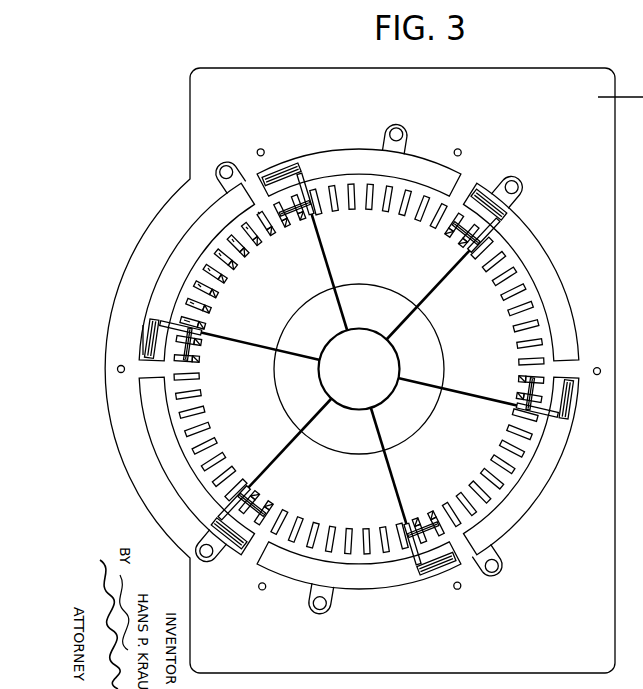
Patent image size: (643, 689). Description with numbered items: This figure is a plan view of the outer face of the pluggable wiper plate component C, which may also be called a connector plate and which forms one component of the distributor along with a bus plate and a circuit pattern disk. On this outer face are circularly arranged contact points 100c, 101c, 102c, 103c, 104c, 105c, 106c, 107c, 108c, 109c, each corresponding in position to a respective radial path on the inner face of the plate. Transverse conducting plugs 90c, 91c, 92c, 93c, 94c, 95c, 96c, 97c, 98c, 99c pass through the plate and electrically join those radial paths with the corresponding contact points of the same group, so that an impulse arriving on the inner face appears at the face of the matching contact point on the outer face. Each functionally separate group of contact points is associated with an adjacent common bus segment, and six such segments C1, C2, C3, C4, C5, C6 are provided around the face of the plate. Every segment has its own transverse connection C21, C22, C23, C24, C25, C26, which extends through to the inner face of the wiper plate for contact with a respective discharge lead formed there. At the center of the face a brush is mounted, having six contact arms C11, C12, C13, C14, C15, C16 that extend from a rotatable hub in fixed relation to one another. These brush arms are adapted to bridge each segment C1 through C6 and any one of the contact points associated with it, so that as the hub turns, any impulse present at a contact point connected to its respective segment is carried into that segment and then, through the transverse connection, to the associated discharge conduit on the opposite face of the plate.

The pluggable wiper plate component C is at (576, 64).
The common bus segment C1 is at (210, 222).
The common bus segment C2 is at (420, 165).
The common bus segment C3 is at (525, 236).
The common bus segment C4 is at (540, 479).
The common bus segment C5 is at (387, 577).
The common bus segment C6 is at (140, 480).
The brush contact arm C11 is at (254, 343).
The brush contact arm C12 is at (330, 262).
The brush contact arm C13 is at (442, 284).
The brush contact arm C14 is at (455, 393).
The brush contact arm C15 is at (396, 492).
The brush contact arm C16 is at (272, 458).
The transverse connection C21 is at (229, 164).
The transverse connection C22 is at (400, 129).
The transverse connection C23 is at (517, 183).
The transverse connection C24 is at (499, 575).
The transverse connection C25 is at (324, 611).
The transverse connection C26 is at (211, 560).
The transverse conducting plug 90c is at (163, 376).
The transverse conducting plug 91c is at (143, 340).
The transverse conducting plug 92c is at (185, 321).
The transverse conducting plug 93c is at (191, 303).
The transverse conducting plug 94c is at (199, 286).
The transverse conducting plug 95c is at (209, 270).
The transverse conducting plug 96c is at (220, 254).
The transverse conducting plug 97c is at (233, 241).
The transverse conducting plug 98c is at (247, 228).
The transverse conducting plug 99c is at (259, 213).
The contact point 100c is at (200, 359).
The contact point 101c is at (201, 343).
The contact point 102c is at (205, 326).
The contact point 103c is at (210, 310).
The contact point 104c is at (217, 295).
The contact point 105c is at (226, 281).
The contact point 106c is at (236, 267).
The contact point 107c is at (247, 255).
The contact point 108c is at (259, 244).
The contact point 109c is at (273, 234).